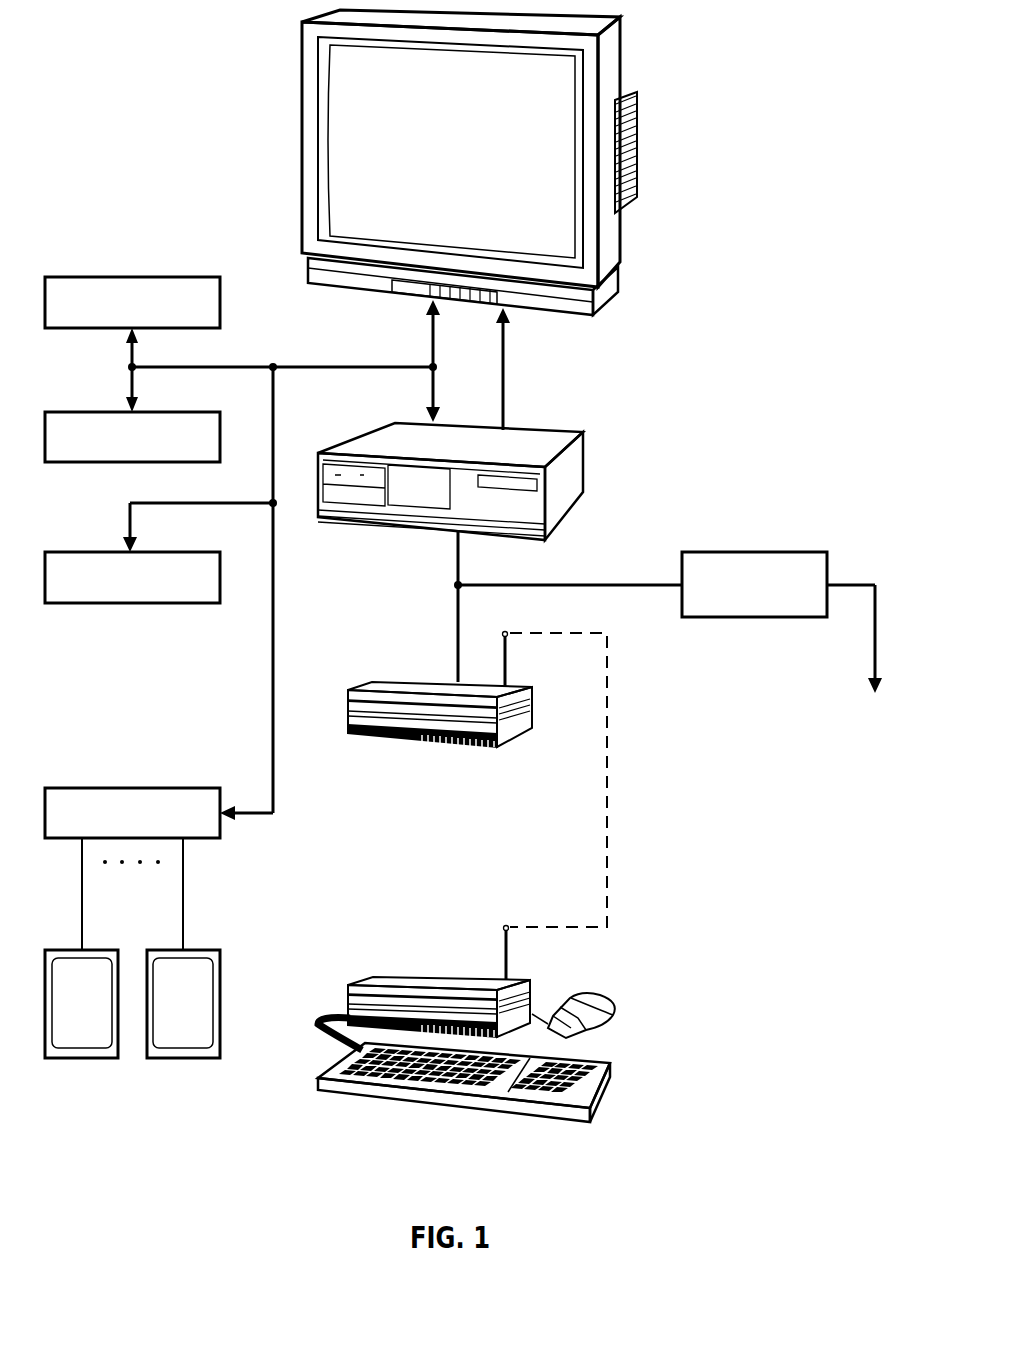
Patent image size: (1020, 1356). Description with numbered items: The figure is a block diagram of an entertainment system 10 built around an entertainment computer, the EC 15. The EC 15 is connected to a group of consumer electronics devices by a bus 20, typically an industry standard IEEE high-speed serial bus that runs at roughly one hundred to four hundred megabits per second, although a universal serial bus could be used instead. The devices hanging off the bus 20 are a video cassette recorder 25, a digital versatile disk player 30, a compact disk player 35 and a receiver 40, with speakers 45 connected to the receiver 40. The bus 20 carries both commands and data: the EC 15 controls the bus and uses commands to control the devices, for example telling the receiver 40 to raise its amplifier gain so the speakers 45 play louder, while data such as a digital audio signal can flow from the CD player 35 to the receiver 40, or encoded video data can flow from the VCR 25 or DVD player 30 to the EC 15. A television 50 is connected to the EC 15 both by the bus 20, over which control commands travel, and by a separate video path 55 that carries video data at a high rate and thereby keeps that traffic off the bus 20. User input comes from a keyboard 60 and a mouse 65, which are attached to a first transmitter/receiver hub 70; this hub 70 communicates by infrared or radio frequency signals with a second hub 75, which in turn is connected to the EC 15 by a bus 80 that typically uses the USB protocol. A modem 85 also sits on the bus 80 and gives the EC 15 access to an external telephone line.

The entertainment system 10 is at (752, 250).
The EC 15 is at (376, 442).
The bus 20 is at (338, 367).
The video cassette recorder 25 is at (92, 282).
The digital versatile disk player 30 is at (92, 417).
The compact disk player 35 is at (92, 557).
The receiver 40 is at (92, 795).
The speakers 45 is at (197, 960).
The television 50 is at (613, 50).
The video path 55 is at (505, 368).
The keyboard 60 is at (358, 1097).
The mouse 65 is at (590, 1030).
The first transmitter/receiver hub 70 is at (418, 977).
The second hub 75 is at (408, 682).
The bus 80 is at (630, 585).
The modem 85 is at (780, 557).